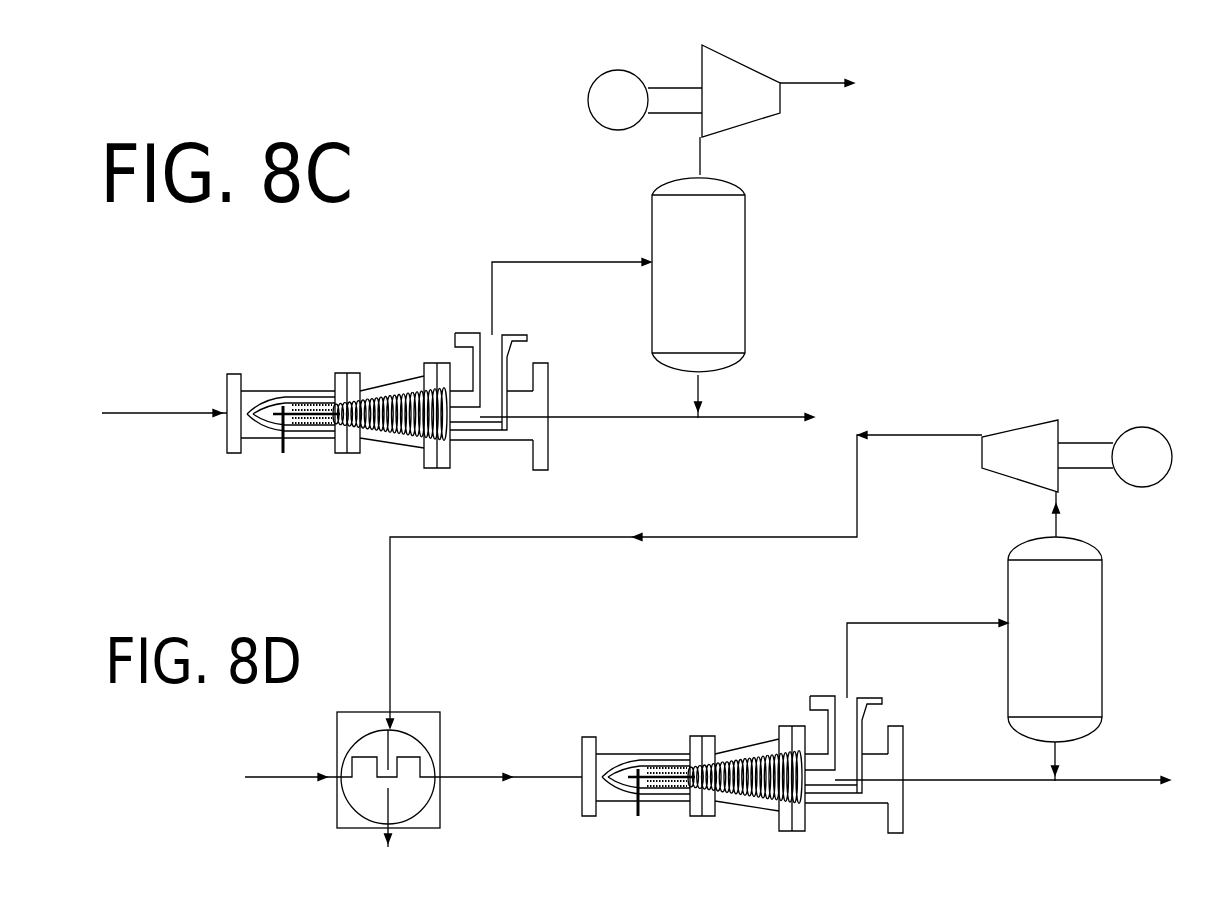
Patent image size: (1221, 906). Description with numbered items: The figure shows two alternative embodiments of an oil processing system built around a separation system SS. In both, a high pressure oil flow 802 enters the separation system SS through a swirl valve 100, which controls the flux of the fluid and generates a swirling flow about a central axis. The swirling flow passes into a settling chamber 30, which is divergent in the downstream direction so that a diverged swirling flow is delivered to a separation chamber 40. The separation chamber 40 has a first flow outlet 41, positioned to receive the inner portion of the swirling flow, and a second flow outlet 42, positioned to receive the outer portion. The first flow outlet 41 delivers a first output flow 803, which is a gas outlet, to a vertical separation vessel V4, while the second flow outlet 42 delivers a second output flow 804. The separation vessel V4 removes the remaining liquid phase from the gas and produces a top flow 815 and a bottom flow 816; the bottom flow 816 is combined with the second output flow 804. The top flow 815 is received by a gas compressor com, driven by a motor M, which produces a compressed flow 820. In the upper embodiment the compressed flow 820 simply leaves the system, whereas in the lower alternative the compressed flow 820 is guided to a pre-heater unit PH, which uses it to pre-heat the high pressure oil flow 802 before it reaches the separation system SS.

In FIG. 8C, the swirl valve 100 is at (234, 376).
In FIG. 8D, the swirl valve 100 is at (638, 751).
In FIG. 8C, the settling chamber 30 is at (402, 387).
In FIG. 8D, the settling chamber 30 is at (747, 757).
In FIG. 8C, the separation system SS is at (385, 343).
In FIG. 8D, the separation system SS is at (745, 725).
In FIG. 8C, the separation chamber 40 is at (442, 372).
In FIG. 8D, the separation chamber 40 is at (809, 727).
In FIG. 8C, the first flow outlet 41 is at (522, 337).
In FIG. 8D, the first flow outlet 41 is at (874, 741).
In FIG. 8C, the second flow outlet 42 is at (540, 377).
In FIG. 8D, the second flow outlet 42 is at (891, 779).
In FIG. 8C, the high pressure oil flow 802 is at (153, 410).
In FIG. 8D, the high pressure oil flow 802 is at (487, 777).
In FIG. 8C, the first output flow 803 is at (492, 293).
In FIG. 8D, the first output flow 803 is at (927, 659).
In FIG. 8C, the second output flow 804 is at (612, 418).
In FIG. 8D, the second output flow 804 is at (1002, 802).
In FIG. 8C, the top flow 815 is at (702, 168).
In FIG. 8D, the top flow 815 is at (1058, 523).
In FIG. 8C, the bottom flow 816 is at (698, 392).
In FIG. 8D, the bottom flow 816 is at (1093, 761).
In FIG. 8C, the compressed flow 820 is at (830, 85).
In FIG. 8D, the compressed flow 820 is at (905, 435).
In FIG. 8C, the separation vessel V4 is at (728, 230).
In FIG. 8D, the separation vessel V4 is at (1087, 639).
In FIG. 8C, the motor M is at (618, 100).
In FIG. 8D, the motor M is at (1142, 457).
In FIG. 8D, the pre-heater unit PH is at (427, 731).
In FIG. 8D, the gas compressor com is at (1003, 478).